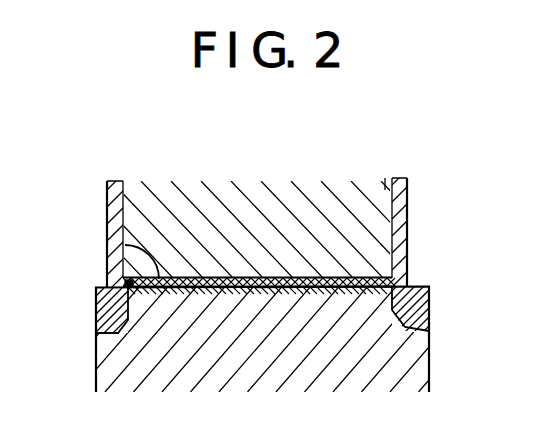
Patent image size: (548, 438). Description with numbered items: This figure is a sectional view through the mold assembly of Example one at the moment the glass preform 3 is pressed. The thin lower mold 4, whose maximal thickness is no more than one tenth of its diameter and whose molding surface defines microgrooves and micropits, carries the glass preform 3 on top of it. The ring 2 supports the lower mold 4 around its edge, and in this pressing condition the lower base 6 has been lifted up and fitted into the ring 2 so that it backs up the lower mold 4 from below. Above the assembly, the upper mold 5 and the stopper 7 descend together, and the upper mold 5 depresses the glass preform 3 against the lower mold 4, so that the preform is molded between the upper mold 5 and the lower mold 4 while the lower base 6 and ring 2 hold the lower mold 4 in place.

The ring 2 is at (418, 318).
The glass preform 3 is at (125, 245).
The lower mold 4 is at (403, 286).
The upper mold 5 is at (160, 210).
The lower base 6 is at (403, 362).
The stopper 7 is at (396, 212).